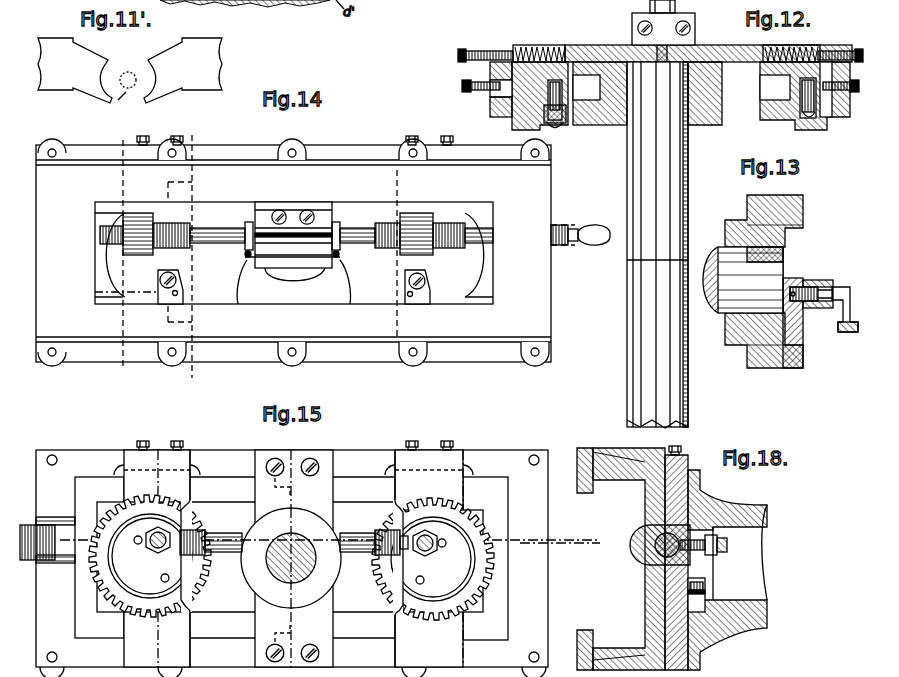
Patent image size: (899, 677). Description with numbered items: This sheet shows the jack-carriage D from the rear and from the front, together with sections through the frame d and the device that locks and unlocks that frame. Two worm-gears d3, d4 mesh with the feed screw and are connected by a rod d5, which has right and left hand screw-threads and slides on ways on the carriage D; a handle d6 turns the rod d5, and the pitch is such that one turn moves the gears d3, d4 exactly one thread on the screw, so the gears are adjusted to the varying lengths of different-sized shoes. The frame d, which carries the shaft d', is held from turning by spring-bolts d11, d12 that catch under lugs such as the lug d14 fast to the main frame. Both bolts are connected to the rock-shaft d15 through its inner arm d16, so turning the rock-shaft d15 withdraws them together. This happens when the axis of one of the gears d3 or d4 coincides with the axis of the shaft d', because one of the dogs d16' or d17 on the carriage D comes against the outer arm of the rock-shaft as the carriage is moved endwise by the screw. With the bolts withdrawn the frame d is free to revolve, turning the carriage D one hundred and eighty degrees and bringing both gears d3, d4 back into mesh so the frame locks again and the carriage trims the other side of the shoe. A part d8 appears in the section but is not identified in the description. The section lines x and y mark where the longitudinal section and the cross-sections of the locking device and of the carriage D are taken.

In FIG. 12, the frame d is at (708, 31).
In FIG. 13, the frame d is at (778, 281).
In FIG. 12, the shaft d' is at (657, 245).
In FIG. 13, the shaft d' is at (743, 280).
In FIG. 15, the worm-gear d3 is at (135, 567).
In FIG. 18, the worm-gear d3 is at (727, 570).
In FIG. 15, the worm-gear d4 is at (433, 558).
In FIG. 14, the rod d5 is at (361, 250).
In FIG. 15, the rod d5 is at (360, 552).
In FIG. 18, the rod d5 is at (655, 547).
In FIG. 14, the handle d6 is at (598, 230).
In FIG. 15, the handle d6 is at (27, 560).
In FIG. 13, the bracket d8 is at (850, 332).
In FIG. 15, the bracket d8 is at (291, 558).
In FIG. 11', the spring-bolt d11 is at (183, 70).
In FIG. 12, the spring-bolt d11 is at (822, 122).
In FIG. 11', the spring-bolt d12 is at (75, 70).
In FIG. 12, the spring-bolt d12 is at (578, 42).
In FIG. 11', the lug d14 is at (124, 92).
In FIG. 11', the rock-shaft d15 is at (128, 72).
In FIG. 13, the rock-shaft d15 is at (822, 288).
In FIG. 13, the inner arm d16 is at (793, 308).
In FIG. 14, the dog d16' is at (192, 287).
In FIG. 18, the dog d16' is at (682, 595).
In FIG. 14, the dog d17 is at (405, 298).
In FIG. 14, the carriage D is at (305, 256).
In FIG. 15, the carriage D is at (318, 559).
In FIG. 18, the carriage D is at (700, 650).
In FIG. 15, the section line x x is at (275, 674).
In FIG. 15, the section line y y is at (158, 450).